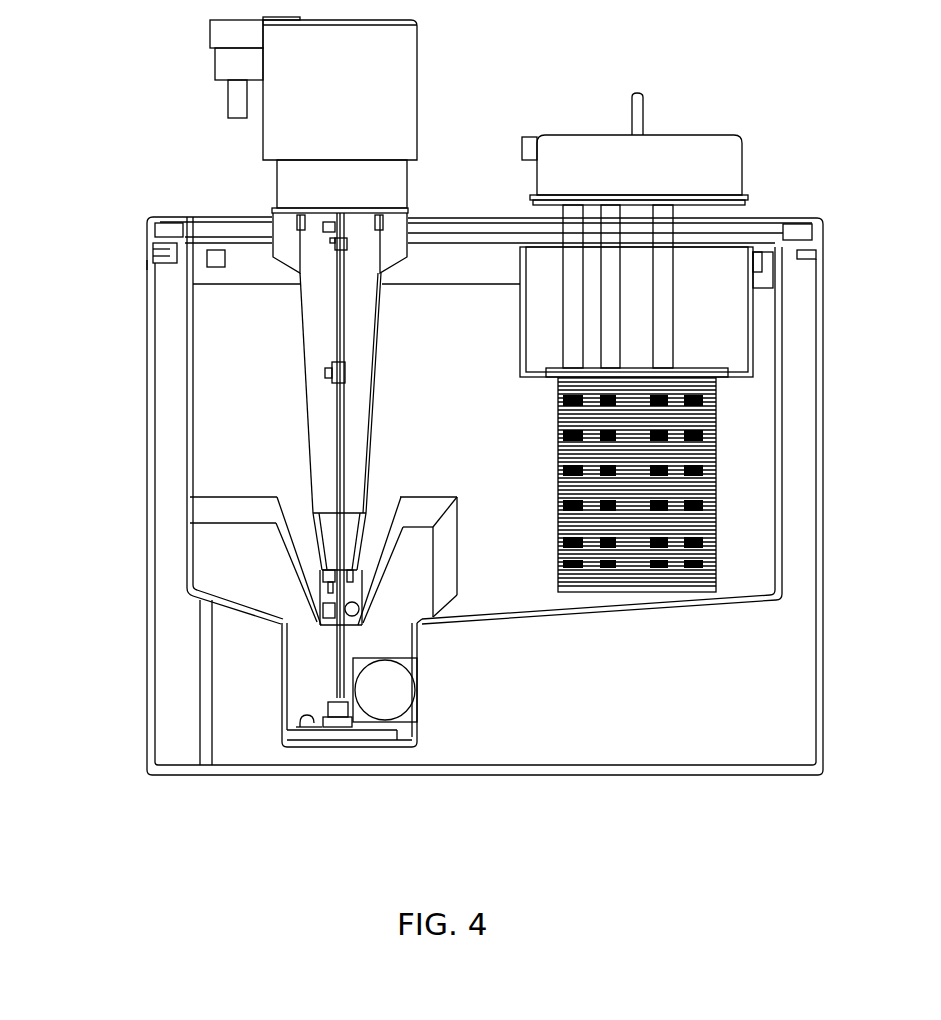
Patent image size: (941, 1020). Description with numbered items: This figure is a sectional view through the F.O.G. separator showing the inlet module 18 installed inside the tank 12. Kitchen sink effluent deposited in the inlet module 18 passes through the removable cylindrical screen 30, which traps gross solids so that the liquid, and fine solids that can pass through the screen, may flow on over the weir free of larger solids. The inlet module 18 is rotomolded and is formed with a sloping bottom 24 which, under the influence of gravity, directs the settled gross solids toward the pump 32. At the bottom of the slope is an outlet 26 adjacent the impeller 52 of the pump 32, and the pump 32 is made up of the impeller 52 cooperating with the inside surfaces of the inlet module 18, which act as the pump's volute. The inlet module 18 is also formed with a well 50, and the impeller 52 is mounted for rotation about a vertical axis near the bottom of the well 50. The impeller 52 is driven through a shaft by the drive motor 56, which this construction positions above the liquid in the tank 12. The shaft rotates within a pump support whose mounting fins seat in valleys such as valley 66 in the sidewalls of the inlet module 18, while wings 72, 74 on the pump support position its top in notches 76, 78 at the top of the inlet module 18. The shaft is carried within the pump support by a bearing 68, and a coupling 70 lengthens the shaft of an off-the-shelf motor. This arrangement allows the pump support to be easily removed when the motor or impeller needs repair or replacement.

The tank 12 is at (823, 680).
The inlet module 18 is at (782, 500).
The sloping bottom 24 is at (653, 610).
The outlet 26 is at (395, 700).
The removable cylindrical screen 30 is at (713, 423).
The pump 32 is at (315, 418).
The well 50 is at (278, 702).
The impeller 52 is at (303, 723).
The drive motor 56 is at (358, 91).
The valley 66 is at (293, 552).
The bearing 68 is at (323, 612).
The coupling 70 is at (325, 373).
The wing 72 is at (280, 232).
The wing 74 is at (408, 217).
The notch 76 is at (283, 237).
The notch 78 is at (400, 233).